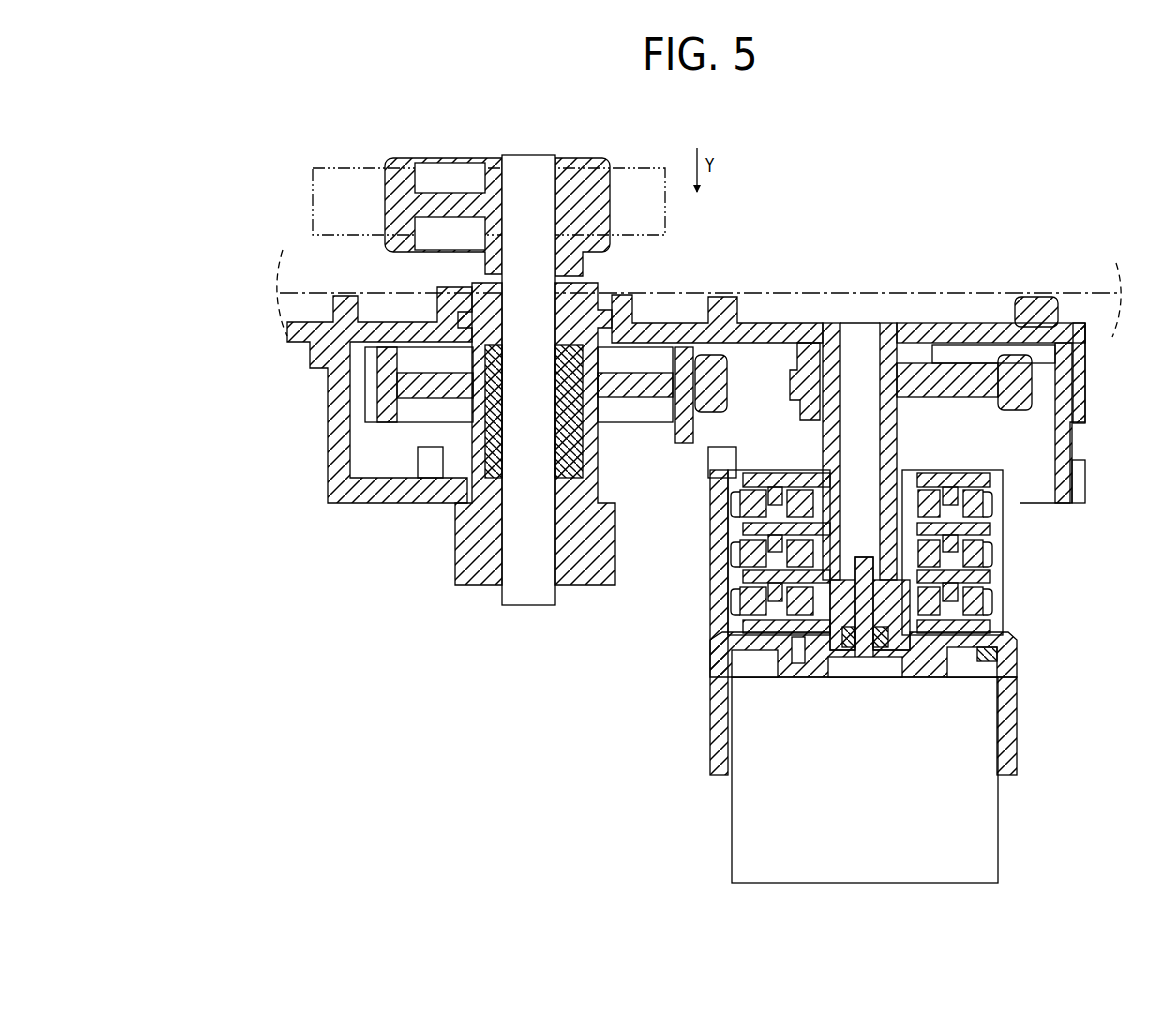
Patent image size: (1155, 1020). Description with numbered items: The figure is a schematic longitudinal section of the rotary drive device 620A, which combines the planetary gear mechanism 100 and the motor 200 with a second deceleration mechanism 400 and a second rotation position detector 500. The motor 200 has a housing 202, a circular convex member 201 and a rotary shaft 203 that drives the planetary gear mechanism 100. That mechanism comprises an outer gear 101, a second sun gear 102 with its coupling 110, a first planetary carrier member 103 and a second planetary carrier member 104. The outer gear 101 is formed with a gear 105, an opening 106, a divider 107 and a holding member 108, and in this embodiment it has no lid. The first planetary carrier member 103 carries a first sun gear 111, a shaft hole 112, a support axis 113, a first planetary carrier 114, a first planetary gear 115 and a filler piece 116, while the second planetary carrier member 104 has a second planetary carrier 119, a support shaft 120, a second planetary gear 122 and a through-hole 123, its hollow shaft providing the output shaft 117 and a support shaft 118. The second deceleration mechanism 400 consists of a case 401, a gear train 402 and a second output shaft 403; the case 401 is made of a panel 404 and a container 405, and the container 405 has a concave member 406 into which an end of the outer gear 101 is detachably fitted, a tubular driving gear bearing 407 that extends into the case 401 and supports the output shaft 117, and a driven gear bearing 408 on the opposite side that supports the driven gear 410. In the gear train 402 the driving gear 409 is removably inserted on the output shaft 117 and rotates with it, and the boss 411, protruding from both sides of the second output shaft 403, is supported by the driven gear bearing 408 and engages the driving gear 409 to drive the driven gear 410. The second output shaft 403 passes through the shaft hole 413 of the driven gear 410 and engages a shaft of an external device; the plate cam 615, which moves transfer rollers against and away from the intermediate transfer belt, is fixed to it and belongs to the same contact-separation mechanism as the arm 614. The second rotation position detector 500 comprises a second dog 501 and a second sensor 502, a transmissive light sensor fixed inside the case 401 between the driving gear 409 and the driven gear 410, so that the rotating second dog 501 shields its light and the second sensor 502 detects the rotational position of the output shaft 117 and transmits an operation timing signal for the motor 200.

The planetary gear mechanism 100 is at (831, 647).
The outer gear 101 is at (1040, 465).
The second sun gear 102 is at (902, 640).
The first planetary carrier member 103 is at (732, 545).
The second planetary carrier member 104 is at (720, 482).
The gear 105 is at (1020, 480).
The opening 106 is at (835, 677).
The divider 107 is at (742, 661).
The holding member 108 is at (710, 757).
The coupling 110 is at (747, 635).
The first sun gear 111 is at (903, 560).
The shaft hole 112 is at (858, 500).
The support axis 113 is at (975, 560).
The first planetary carrier 114 is at (990, 525).
The first planetary gear 115 is at (985, 545).
The filler piece 116 is at (968, 651).
The output shaft 117 is at (900, 387).
The support shaft 118 is at (920, 416).
The second planetary carrier 119 is at (788, 470).
The support shaft 120 is at (758, 470).
The second planetary gear 122 is at (985, 508).
The through-hole 123 is at (853, 335).
The motor 200 is at (825, 780).
The circular convex member 201 is at (880, 677).
The housing 202 is at (727, 836).
The rotary shaft 203 is at (858, 678).
The second deceleration mechanism 400 is at (868, 218).
The case 401 is at (1098, 243).
The gear train 402 is at (765, 245).
The second output shaft 403 is at (545, 608).
The panel 404 is at (984, 340).
The container 405 is at (1076, 360).
The concave member 406 is at (1010, 497).
The driving gear bearing 407 is at (777, 416).
The driven gear bearing 408 is at (465, 285).
The driving gear 409 is at (705, 353).
The driven gear 410 is at (664, 346).
The boss 411 is at (586, 292).
The shaft hole 413 is at (503, 592).
The second rotation position detector 500 is at (262, 423).
The second dog 501 is at (700, 385).
The second sensor 502 is at (720, 402).
The arm 614 is at (348, 244).
The plate cam 615 is at (378, 198).
The rotary drive device 620A is at (1008, 130).